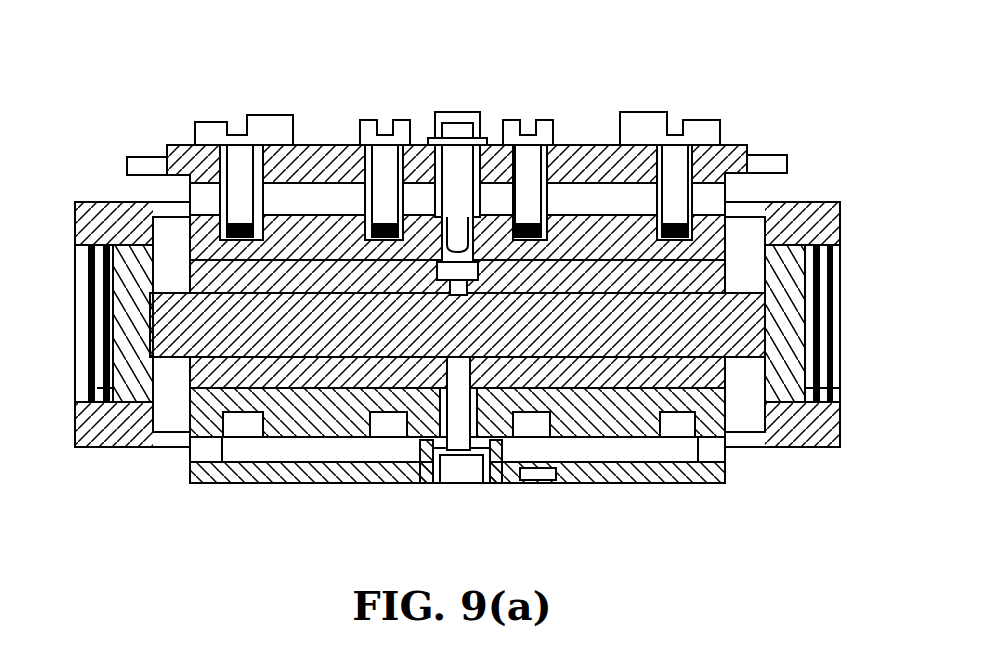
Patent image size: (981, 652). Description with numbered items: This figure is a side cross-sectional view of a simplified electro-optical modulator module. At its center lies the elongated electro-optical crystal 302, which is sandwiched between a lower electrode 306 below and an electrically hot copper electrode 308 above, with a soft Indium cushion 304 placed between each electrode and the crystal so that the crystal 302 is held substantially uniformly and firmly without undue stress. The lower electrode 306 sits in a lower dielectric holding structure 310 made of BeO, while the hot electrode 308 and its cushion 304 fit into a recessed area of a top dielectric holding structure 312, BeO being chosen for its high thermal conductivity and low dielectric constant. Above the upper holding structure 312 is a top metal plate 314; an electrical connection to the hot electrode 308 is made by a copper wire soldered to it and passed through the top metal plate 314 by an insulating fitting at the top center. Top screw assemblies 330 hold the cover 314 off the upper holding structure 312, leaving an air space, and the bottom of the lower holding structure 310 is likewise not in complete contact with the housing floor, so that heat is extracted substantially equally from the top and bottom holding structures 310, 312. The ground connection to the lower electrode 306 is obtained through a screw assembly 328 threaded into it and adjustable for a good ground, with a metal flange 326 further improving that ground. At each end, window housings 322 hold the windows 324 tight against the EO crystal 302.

The electro-optical crystal 302 is at (717, 337).
The soft cushion 304 is at (670, 353).
The lower electrode 306 is at (590, 370).
The hot copper electrode 308 is at (300, 273).
The lower dielectric holding structure 310 is at (322, 412).
The top dielectric holding structure 312 is at (598, 237).
The top metal plate 314 is at (725, 150).
The window housing 322 is at (100, 202).
The window 324 is at (790, 252).
The metal flange 326 is at (532, 478).
The screw assembly 328 is at (457, 423).
The top screw assembly 330 is at (220, 132).